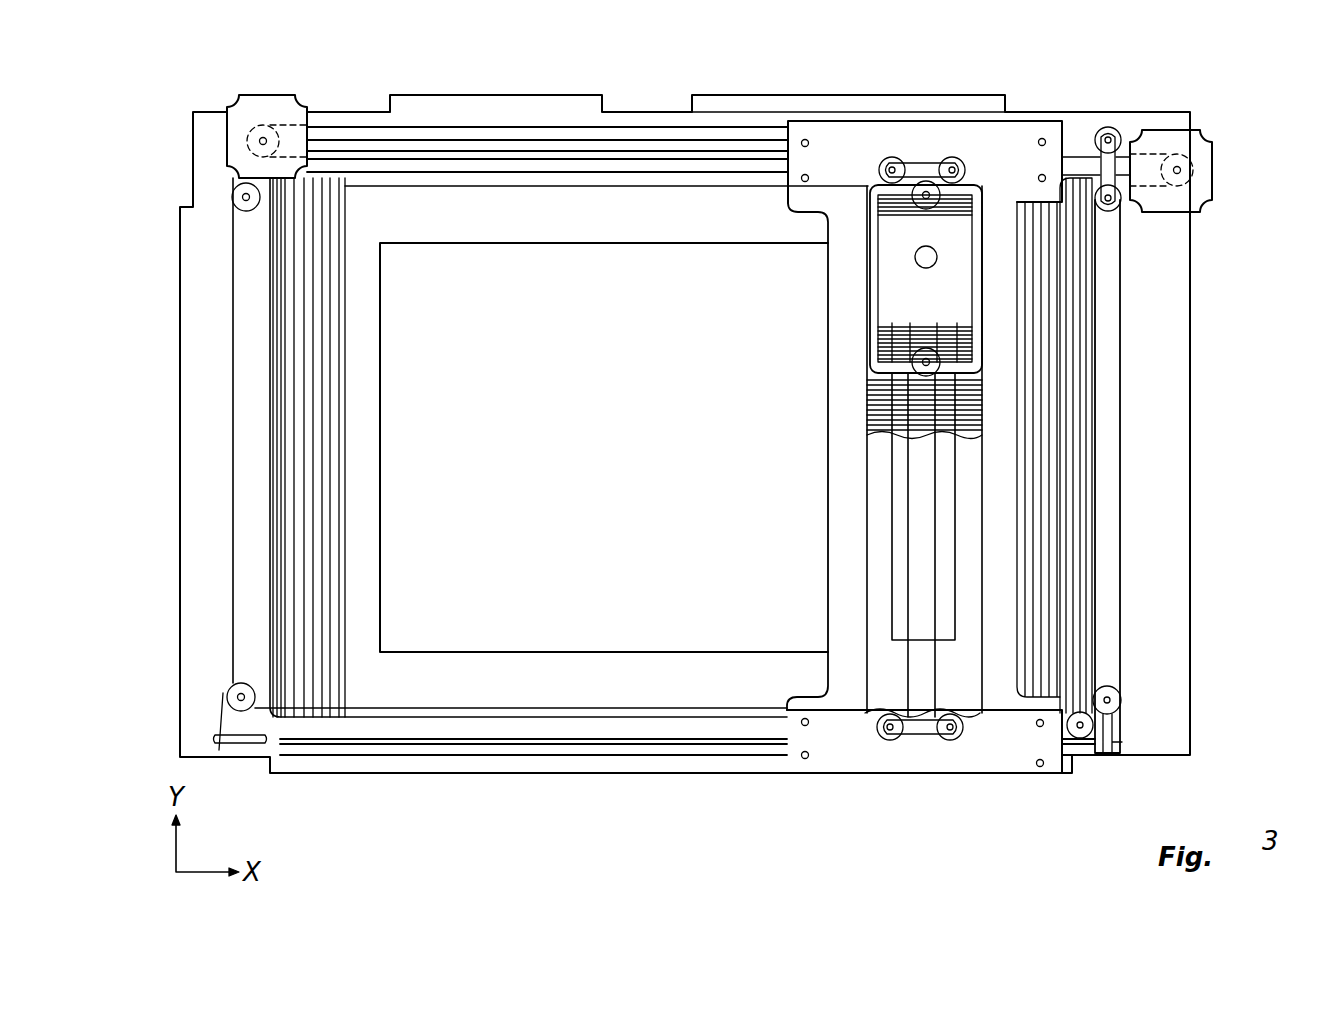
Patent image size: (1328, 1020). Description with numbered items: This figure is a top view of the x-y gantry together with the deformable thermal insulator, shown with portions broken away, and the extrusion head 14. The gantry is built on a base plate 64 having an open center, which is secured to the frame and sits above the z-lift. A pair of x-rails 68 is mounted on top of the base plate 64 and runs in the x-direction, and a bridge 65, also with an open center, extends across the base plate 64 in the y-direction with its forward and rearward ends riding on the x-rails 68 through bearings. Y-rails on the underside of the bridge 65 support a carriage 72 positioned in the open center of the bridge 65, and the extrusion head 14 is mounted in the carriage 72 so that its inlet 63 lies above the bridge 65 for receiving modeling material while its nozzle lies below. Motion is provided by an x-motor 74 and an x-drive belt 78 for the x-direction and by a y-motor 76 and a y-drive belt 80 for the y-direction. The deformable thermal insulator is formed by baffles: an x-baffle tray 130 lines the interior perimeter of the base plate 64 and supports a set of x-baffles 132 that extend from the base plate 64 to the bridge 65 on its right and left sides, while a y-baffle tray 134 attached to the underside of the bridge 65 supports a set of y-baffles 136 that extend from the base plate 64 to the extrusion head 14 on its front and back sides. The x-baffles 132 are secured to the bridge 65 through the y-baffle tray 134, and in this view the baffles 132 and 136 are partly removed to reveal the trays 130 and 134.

The extrusion head 14 is at (903, 293).
The extrusion head inlet 63 is at (914, 258).
The base plate 64 is at (1175, 249).
The bridge 65 is at (1020, 142).
The x-rails 68 is at (447, 143).
The carriage 72 is at (875, 370).
The x-motor 74 is at (263, 106).
The y-motor 76 is at (1193, 150).
The x-drive belt 78 is at (717, 130).
The y-drive belt 80 is at (1100, 500).
The x-baffle tray 130 is at (700, 688).
The x-baffles 132 is at (320, 206).
The y-baffle tray 134 is at (960, 670).
The y-baffles 136 is at (873, 437).